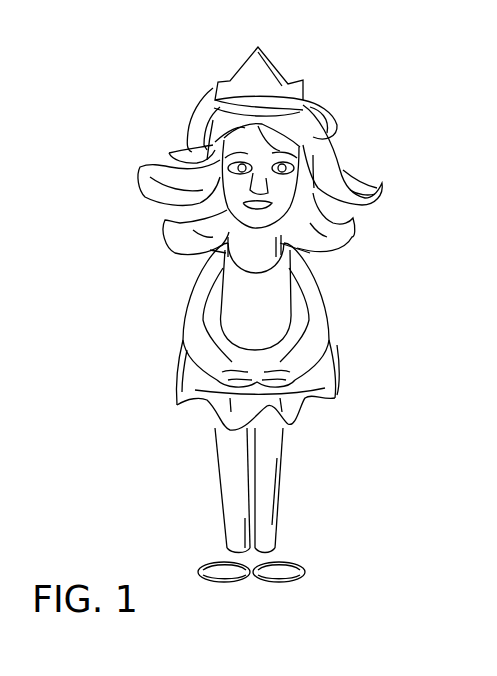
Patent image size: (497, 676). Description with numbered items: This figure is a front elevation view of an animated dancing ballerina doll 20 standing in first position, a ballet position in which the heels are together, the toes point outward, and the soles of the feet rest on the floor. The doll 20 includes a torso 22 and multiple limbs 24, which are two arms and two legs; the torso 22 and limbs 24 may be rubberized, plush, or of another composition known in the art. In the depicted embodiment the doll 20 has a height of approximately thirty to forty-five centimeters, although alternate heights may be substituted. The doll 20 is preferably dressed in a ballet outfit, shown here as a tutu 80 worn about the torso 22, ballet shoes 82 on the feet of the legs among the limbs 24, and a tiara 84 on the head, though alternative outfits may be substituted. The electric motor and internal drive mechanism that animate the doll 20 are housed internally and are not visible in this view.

The doll 20 is at (125, 108).
The torso 22 is at (348, 290).
The limbs 24 is at (207, 498).
The tutu 80 is at (330, 368).
The ballet shoes 82 is at (310, 575).
The tiara 84 is at (276, 80).